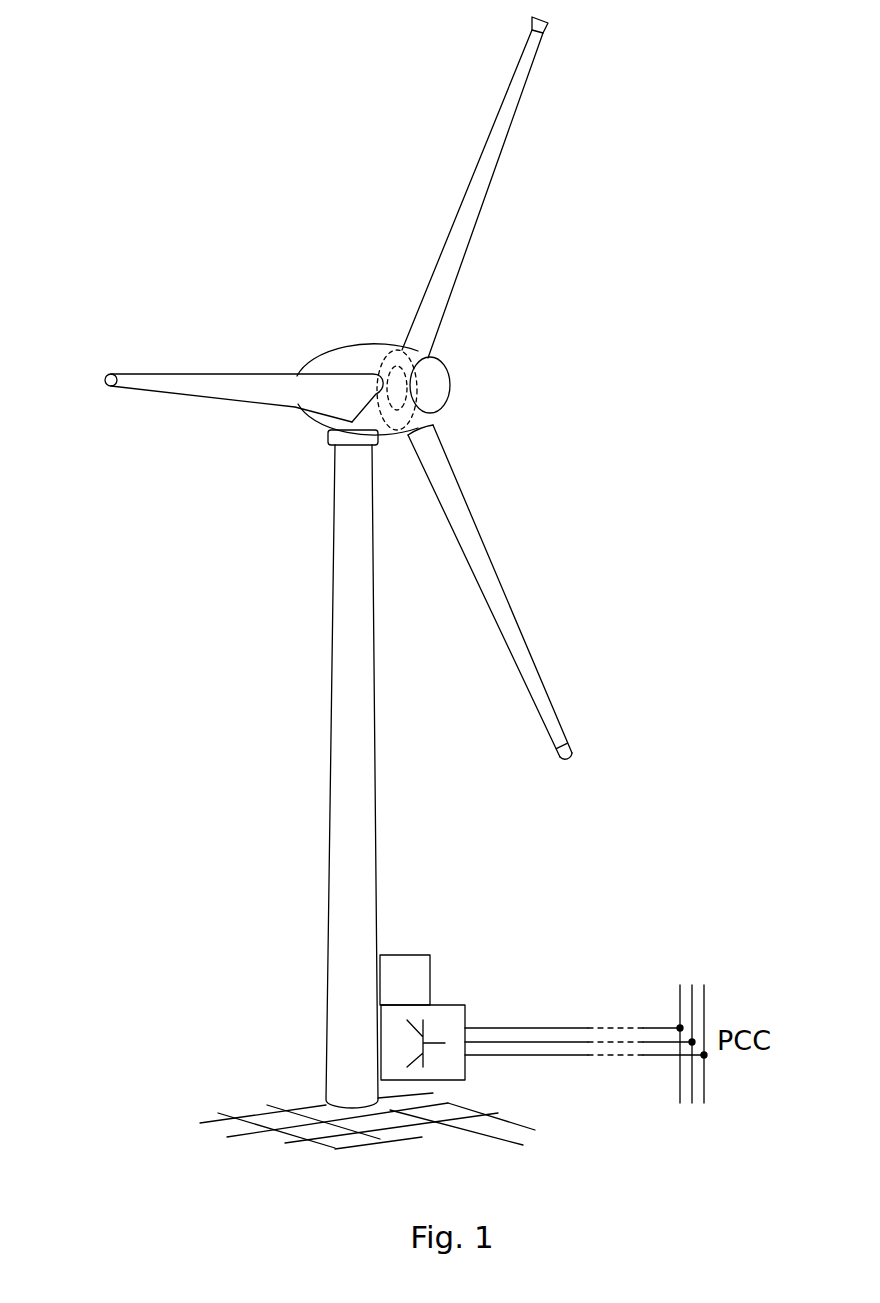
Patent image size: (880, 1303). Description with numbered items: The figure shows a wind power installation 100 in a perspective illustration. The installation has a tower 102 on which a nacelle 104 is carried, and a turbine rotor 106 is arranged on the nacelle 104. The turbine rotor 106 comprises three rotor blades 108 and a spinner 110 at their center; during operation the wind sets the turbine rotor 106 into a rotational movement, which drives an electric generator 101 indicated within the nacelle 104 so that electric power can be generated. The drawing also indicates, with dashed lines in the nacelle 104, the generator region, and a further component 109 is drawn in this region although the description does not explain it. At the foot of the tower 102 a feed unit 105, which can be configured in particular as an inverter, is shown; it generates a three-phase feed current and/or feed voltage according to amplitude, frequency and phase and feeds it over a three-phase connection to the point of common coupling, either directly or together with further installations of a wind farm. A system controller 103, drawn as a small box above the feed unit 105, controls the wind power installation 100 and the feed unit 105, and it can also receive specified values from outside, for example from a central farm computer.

The wind power installation 100 is at (279, 528).
The electric generator 101 is at (373, 345).
The tower 102 is at (358, 768).
The system controller 103 is at (427, 975).
The nacelle 104 is at (348, 355).
The feed unit 105 is at (465, 1066).
The turbine rotor 106 is at (533, 295).
The rotor blades 108 is at (488, 147).
The rotor shaft 109 is at (433, 427).
The spinner 110 is at (435, 383).